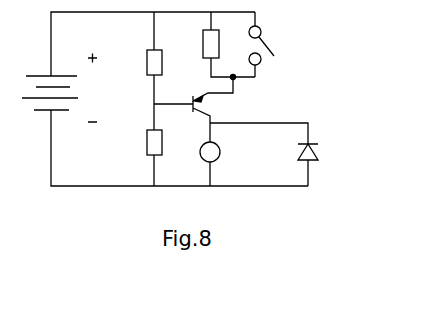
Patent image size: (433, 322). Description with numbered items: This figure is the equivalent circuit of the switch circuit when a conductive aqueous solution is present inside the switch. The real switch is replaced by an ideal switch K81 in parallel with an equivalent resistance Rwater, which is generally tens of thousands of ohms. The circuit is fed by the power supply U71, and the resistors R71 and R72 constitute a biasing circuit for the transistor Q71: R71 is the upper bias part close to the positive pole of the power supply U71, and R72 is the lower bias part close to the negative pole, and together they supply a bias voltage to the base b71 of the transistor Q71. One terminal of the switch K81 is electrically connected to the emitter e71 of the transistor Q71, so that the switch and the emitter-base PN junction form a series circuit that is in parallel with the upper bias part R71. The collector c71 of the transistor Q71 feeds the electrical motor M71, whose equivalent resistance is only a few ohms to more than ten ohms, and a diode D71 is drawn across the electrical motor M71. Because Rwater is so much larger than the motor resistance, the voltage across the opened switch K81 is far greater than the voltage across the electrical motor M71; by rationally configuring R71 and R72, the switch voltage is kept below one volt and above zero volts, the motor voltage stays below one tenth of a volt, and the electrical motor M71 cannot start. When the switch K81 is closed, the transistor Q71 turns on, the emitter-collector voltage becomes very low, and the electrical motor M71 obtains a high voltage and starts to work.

The power supply U71 is at (65, 88).
The upper bias part resistor R71 is at (138, 62).
The lower bias part resistor R72 is at (138, 142).
The equivalent resistance of aqueous solution Rwater is at (207, 46).
The ideal switch K81 is at (274, 44).
The first transistor Q71 is at (206, 100).
The base of transistor b71 is at (174, 99).
The emitter of transistor e71 is at (248, 88).
The collector of transistor c71 is at (194, 129).
The electrical motor M71 is at (225, 154).
The diode D71 is at (280, 154).